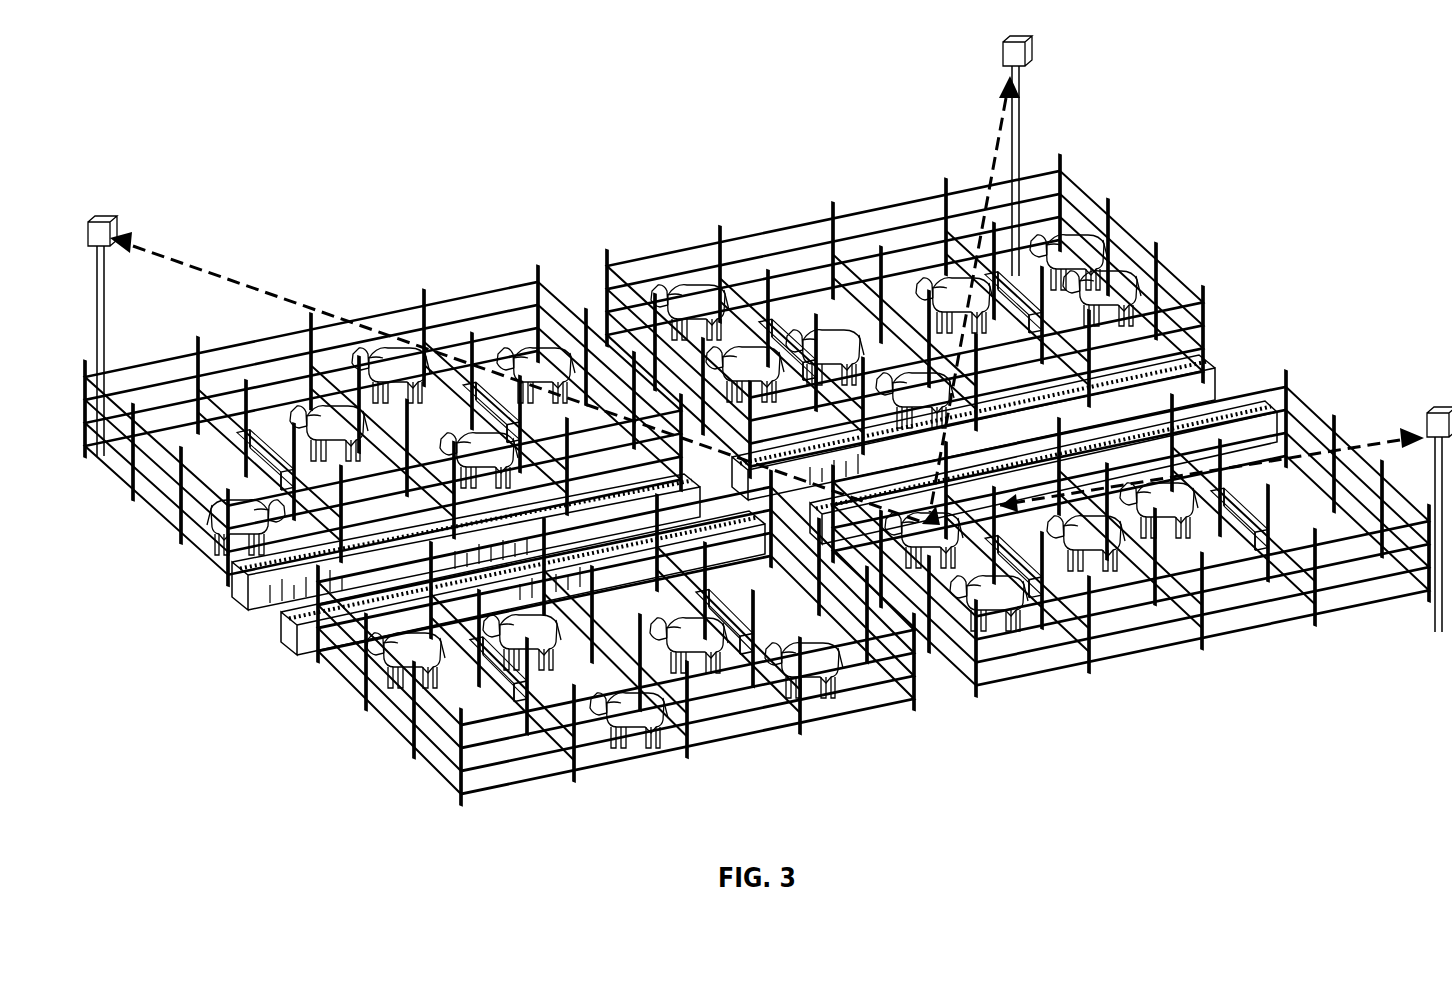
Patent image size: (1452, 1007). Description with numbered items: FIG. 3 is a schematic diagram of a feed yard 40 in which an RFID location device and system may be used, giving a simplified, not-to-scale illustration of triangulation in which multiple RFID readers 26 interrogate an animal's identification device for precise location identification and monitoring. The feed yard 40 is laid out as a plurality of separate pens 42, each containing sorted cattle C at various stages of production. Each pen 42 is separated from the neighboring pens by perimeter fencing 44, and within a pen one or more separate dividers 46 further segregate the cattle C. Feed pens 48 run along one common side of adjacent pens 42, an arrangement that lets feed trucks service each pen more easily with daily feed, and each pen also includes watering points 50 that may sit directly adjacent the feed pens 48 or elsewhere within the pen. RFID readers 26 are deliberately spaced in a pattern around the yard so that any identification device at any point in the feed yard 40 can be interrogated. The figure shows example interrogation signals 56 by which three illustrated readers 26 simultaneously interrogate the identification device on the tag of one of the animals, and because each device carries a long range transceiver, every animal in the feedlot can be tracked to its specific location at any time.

The RFID reader 26 is at (102, 216).
The feed yard 40 is at (1034, 110).
The pen 42 is at (388, 288).
The perimeter fencing 44 is at (542, 270).
The divider 46 is at (202, 338).
The feed pen 48 is at (245, 598).
The watering point 50 is at (252, 472).
The interrogation signal 56 is at (150, 250).
The cattle C is at (385, 350).